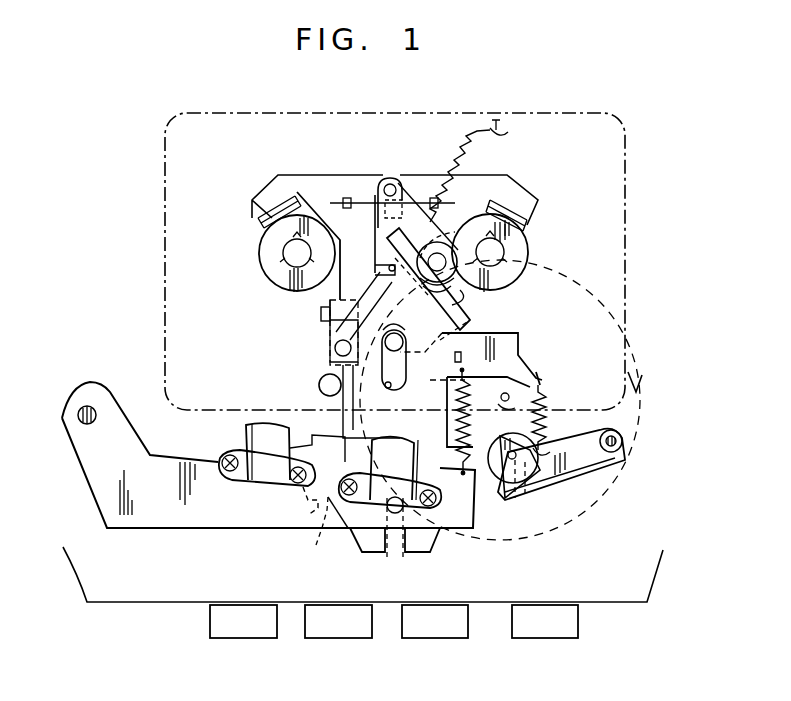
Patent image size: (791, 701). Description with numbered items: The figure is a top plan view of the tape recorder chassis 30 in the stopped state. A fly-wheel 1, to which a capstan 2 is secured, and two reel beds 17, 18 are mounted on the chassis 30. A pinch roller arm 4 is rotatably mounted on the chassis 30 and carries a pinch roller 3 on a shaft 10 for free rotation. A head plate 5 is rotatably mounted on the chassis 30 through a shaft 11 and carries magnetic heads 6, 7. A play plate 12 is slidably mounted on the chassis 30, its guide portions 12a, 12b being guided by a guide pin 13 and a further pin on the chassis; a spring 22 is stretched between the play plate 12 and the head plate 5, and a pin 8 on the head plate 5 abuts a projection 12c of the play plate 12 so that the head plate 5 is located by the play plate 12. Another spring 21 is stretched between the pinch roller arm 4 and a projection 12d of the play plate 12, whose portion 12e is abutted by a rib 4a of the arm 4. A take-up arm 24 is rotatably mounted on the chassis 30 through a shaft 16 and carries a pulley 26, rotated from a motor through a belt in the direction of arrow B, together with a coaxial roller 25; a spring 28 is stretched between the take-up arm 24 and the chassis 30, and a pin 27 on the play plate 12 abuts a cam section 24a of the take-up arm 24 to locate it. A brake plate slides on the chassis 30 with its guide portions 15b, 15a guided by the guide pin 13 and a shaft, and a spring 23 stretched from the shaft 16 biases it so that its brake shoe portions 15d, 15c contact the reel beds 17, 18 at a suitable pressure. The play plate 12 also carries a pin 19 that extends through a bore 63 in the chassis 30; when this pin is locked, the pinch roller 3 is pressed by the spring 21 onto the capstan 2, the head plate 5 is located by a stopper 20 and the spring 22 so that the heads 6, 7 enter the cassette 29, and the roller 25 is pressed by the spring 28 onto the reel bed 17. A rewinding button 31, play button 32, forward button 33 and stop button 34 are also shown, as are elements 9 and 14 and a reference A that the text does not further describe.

The fly-wheel 1 is at (635, 365).
The capstan 2 is at (500, 397).
The pinch roller 3 is at (495, 445).
The pinch roller arm 4 is at (585, 478).
The rib 4a is at (548, 485).
The head plate 5 is at (200, 528).
The magnetic head 6 is at (398, 440).
The magnetic head 7 is at (282, 425).
The pin 8 is at (300, 512).
The pivot pin 9 is at (606, 440).
The shaft 10 is at (508, 462).
The shaft 11 is at (92, 422).
The play plate 12 is at (518, 340).
The guide portion 12a is at (395, 390).
The guide portion 12b is at (385, 545).
The projection 12c is at (316, 526).
The projection 12d is at (542, 380).
The portion 12e is at (522, 498).
The guide pin 13 is at (403, 342).
The pin 14 is at (404, 565).
The guide portion 15a is at (390, 178).
The guide portion 15b is at (400, 325).
The brake shoe portion 15c is at (262, 218).
The brake shoe portion 15d is at (528, 212).
The shaft 16 is at (398, 195).
The reel bed 17 is at (528, 248).
The reel bed 18 is at (260, 253).
The pin 19 is at (335, 348).
The stopper 20 is at (322, 382).
The spring 21 is at (545, 400).
The spring 22 is at (446, 385).
The spring 23 is at (370, 200).
The take-up arm 24 is at (378, 248).
The cam section 24a is at (375, 275).
The roller 25 is at (485, 290).
The pulley 26 is at (450, 285).
The pin 27 is at (403, 299).
The spring 28 is at (500, 145).
The cassette 29 is at (626, 170).
The chassis 30 is at (622, 600).
The rewinding button 31 is at (255, 638).
The play button 32 is at (340, 638).
The forward button 33 is at (440, 638).
The stop button 34 is at (553, 638).
The bore 63 is at (322, 312).
The locus circle A is at (632, 400).
The arrow B is at (439, 270).